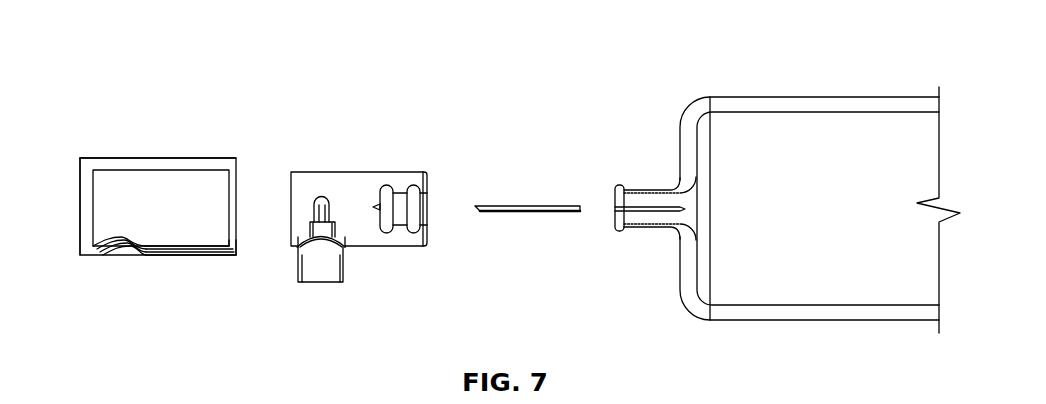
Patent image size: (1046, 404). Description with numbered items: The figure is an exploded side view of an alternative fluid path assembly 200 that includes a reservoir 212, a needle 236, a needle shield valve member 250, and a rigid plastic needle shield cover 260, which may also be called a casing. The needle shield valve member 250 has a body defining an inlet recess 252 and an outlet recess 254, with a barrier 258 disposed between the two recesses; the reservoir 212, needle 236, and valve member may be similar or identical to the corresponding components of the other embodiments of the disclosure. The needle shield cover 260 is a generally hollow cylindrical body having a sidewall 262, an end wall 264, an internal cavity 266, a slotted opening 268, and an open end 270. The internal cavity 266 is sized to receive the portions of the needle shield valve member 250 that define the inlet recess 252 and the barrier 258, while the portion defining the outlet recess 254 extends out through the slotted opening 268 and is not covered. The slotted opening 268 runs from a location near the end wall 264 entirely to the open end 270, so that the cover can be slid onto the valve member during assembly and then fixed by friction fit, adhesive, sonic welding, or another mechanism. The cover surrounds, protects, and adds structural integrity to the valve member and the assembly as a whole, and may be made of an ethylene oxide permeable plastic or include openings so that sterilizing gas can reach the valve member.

The fluid path assembly 200 is at (152, 53).
The reservoir 212 is at (811, 96).
The needle 236 is at (512, 204).
The needle shield valve member 250 is at (367, 226).
The inlet recess 252 is at (400, 213).
The outlet recess 254 is at (330, 276).
The barrier 258 is at (342, 200).
The needle shield cover 260 is at (160, 204).
The sidewall 262 is at (113, 163).
The end wall 264 is at (80, 189).
The internal cavity 266 is at (131, 205).
The slotted opening 268 is at (178, 247).
The open end 270 is at (237, 249).